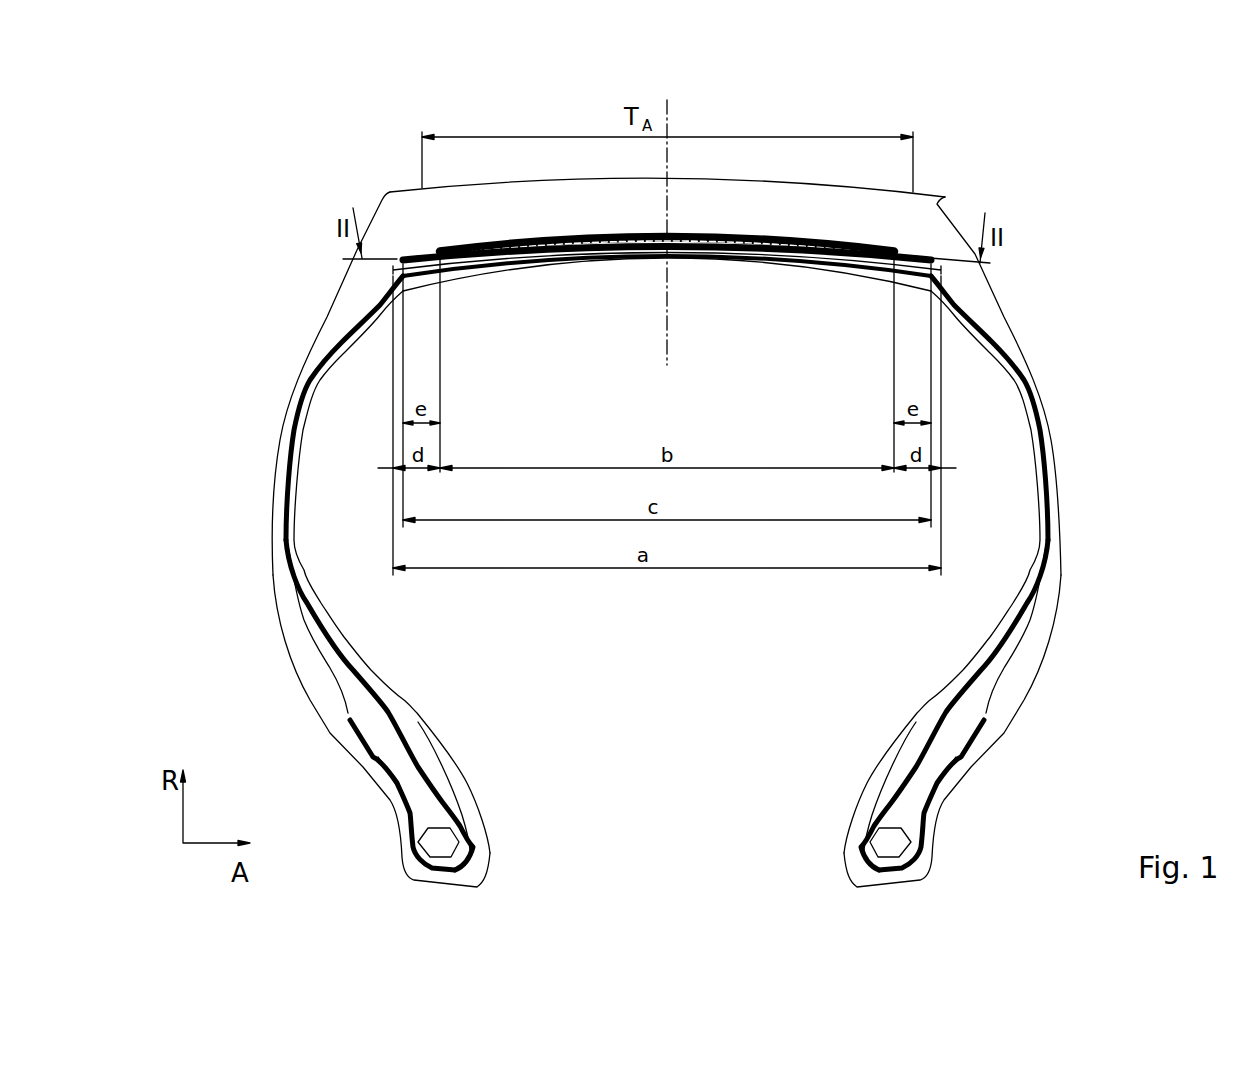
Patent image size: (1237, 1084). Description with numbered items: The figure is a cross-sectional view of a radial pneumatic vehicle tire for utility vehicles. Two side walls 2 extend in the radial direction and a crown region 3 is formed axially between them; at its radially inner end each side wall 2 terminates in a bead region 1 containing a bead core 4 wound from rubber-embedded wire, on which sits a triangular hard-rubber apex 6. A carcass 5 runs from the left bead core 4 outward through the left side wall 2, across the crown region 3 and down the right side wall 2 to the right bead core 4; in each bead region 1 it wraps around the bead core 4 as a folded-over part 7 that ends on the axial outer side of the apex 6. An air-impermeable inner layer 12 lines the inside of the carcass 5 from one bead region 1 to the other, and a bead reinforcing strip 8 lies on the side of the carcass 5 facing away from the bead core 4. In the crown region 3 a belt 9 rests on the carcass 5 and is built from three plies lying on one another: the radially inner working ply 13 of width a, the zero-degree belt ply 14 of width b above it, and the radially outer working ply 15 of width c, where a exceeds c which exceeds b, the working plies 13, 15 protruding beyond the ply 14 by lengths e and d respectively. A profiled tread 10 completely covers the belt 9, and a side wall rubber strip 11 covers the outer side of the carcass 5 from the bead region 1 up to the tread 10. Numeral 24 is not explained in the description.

The bead region 1 is at (735, 539).
The side wall 2 is at (1021, 542).
The crown region 3 is at (719, 181).
The bead core 4 is at (443, 847).
The carcass 5 is at (1036, 600).
The apex 6 is at (968, 706).
The folded-over part 7 is at (960, 757).
The bead reinforcing strip 8 is at (862, 807).
The belt 9 is at (671, 229).
The profiled tread 10 is at (777, 218).
The side wall rubber strip 11 is at (1058, 470).
The inner layer 12 is at (1042, 470).
The radially inner belt ply 13 is at (886, 244).
The zero-degree belt ply 14 is at (807, 256).
The radially outer belt ply 15 is at (997, 119).
The belt bandage ply 24 is at (762, 252).